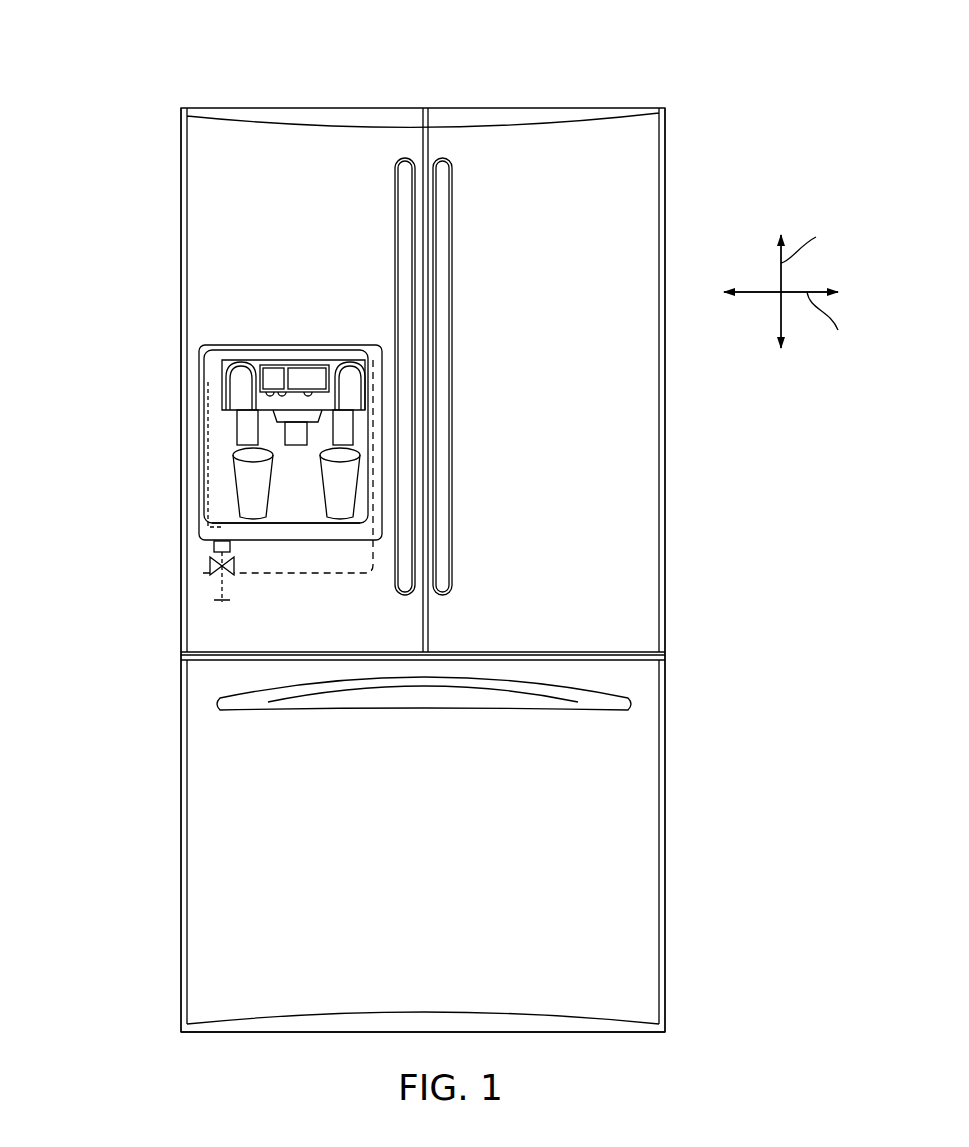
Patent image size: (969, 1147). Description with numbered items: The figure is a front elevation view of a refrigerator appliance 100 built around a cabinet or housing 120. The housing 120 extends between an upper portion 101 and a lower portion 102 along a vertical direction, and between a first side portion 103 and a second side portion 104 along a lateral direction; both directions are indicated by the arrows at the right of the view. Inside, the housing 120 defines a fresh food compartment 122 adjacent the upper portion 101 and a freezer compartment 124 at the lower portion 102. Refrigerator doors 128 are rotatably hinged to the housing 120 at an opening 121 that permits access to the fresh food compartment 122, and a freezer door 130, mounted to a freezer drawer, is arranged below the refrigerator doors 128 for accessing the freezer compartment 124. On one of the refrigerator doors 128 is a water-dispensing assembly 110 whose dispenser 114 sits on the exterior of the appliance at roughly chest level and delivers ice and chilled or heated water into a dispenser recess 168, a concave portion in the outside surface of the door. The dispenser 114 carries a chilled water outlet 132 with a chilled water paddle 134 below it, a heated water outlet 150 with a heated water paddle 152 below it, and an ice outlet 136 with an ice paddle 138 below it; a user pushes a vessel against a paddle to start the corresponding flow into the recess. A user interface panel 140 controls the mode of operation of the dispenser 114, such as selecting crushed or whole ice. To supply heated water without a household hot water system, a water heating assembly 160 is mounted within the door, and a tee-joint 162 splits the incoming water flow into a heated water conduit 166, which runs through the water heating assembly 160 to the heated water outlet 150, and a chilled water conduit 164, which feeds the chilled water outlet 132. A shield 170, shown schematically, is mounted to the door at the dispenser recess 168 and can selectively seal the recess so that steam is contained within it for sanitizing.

The refrigerator appliance 100 is at (150, 68).
The upper portion 101 is at (672, 111).
The lower portion 102 is at (673, 1025).
The first side portion 103 is at (185, 104).
The second side portion 104 is at (660, 104).
The water-dispensing assembly 110 is at (215, 327).
The dispenser 114 is at (250, 347).
The housing 120 is at (665, 885).
The opening 121 is at (425, 103).
The fresh food compartment 122 is at (614, 493).
The freezer compartment 124 is at (614, 800).
The refrigerator doors 128 is at (222, 222).
The freezer door 130 is at (225, 885).
The chilled water outlet 132 is at (347, 413).
The chilled water paddle 134 is at (349, 430).
The ice outlet 136 is at (310, 415).
The ice paddle 138 is at (295, 437).
The user interface panel 140 is at (301, 360).
The heated water outlet 150 is at (245, 413).
The heated water paddle 152 is at (245, 434).
The water heating assembly 160 is at (196, 460).
The tee-joint 162 is at (207, 577).
The chilled water conduit 164 is at (293, 582).
The heated water conduit 166 is at (216, 548).
The dispenser recess 168 is at (290, 504).
The shield 170 is at (330, 524).